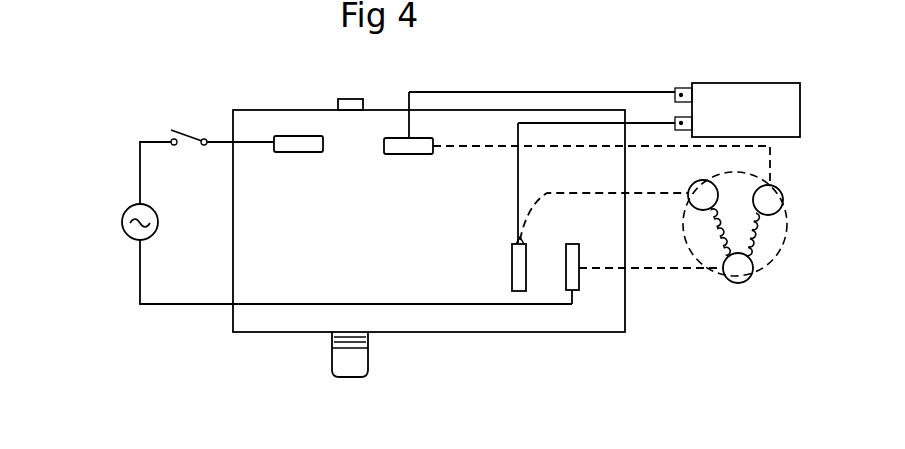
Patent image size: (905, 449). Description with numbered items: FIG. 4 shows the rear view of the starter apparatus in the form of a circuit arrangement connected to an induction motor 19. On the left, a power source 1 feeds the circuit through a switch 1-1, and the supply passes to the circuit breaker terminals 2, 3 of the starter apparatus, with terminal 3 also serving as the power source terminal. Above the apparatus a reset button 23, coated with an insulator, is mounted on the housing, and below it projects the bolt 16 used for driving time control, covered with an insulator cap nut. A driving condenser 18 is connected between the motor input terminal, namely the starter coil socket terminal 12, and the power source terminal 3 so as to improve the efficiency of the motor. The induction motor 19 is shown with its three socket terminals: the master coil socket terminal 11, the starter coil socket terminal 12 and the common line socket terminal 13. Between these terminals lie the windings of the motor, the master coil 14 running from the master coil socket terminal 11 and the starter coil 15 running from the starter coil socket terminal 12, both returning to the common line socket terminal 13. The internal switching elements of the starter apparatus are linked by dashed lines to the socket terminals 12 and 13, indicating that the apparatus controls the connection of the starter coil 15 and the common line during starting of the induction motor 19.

The AC power source 1 is at (133, 214).
The power switch 1-1 is at (192, 134).
The circuit breaker terminal 2 is at (296, 147).
The circuit breaker terminal 3 is at (410, 148).
The master coil socket terminal 11 is at (780, 200).
The starter coil socket terminal 12 is at (517, 270).
The common line socket terminal 13 is at (577, 277).
The master coil 14 is at (758, 233).
The starter coil 15 is at (718, 230).
The bolt for driving time control 16 is at (367, 343).
The driving condenser 18 is at (745, 95).
The induction motor 19 is at (773, 260).
The reset button 23 is at (350, 104).